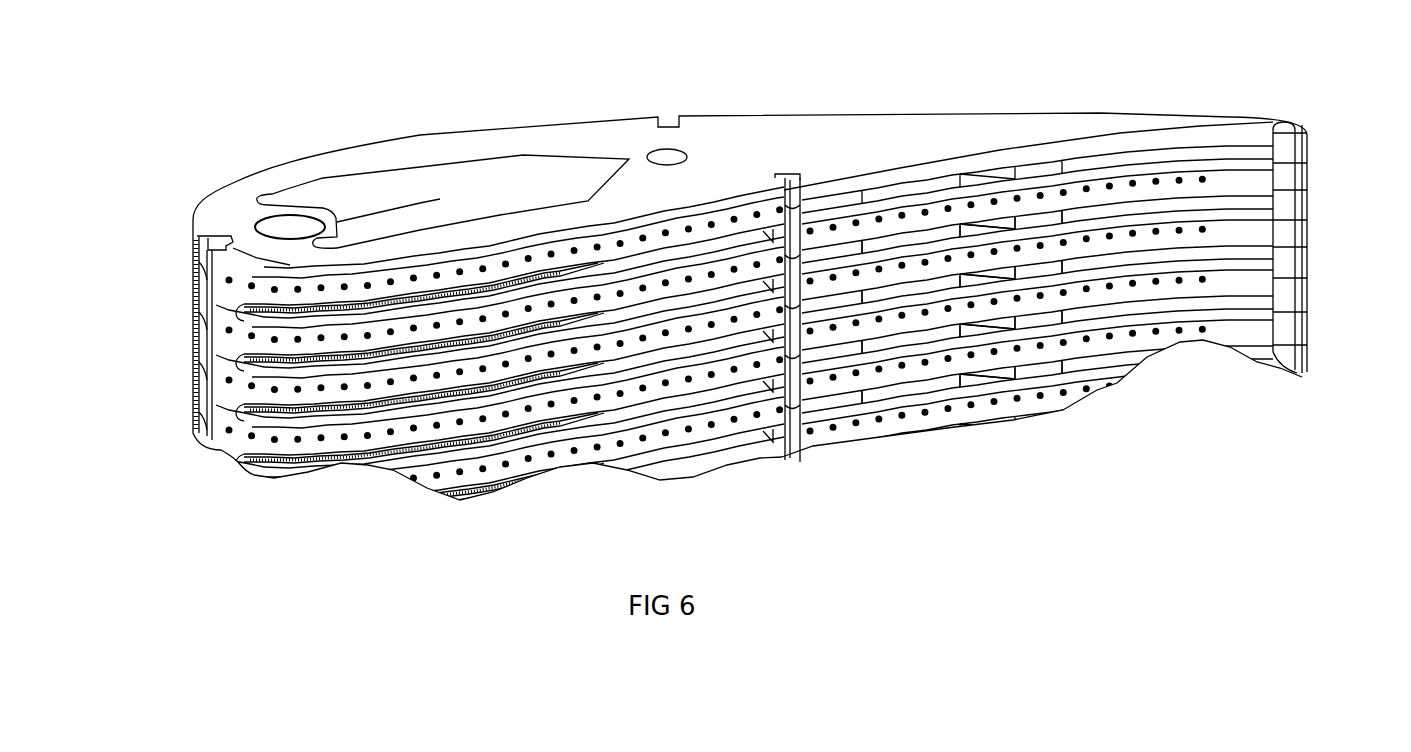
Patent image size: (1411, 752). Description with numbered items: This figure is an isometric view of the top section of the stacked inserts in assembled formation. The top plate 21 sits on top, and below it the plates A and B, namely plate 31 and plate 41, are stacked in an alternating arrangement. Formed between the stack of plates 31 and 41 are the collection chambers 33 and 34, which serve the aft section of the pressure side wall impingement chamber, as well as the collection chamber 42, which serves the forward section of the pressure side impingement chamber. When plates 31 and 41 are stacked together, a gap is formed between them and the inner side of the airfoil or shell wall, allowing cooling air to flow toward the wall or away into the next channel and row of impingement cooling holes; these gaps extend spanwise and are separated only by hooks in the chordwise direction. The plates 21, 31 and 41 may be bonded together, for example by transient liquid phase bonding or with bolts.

The top plate 21 is at (316, 172).
The plate A 31 is at (243, 391).
The collection chamber 33 is at (1180, 205).
The collection chamber 34 is at (987, 275).
The plate B 41 is at (1232, 283).
The collection chamber 42 is at (422, 454).